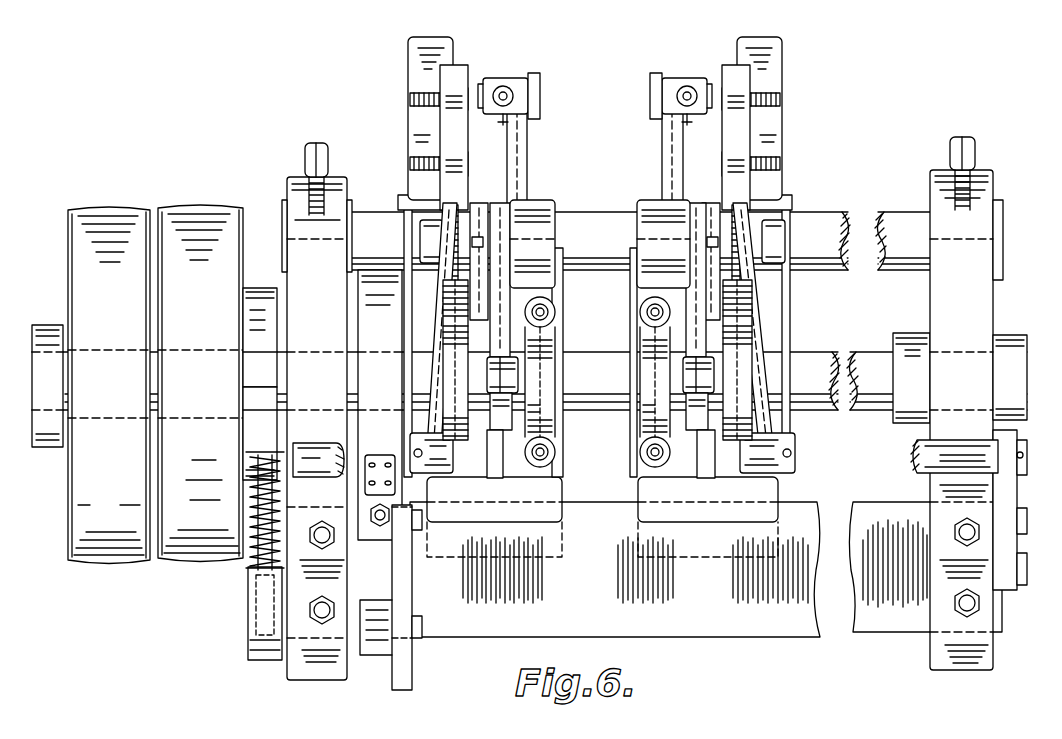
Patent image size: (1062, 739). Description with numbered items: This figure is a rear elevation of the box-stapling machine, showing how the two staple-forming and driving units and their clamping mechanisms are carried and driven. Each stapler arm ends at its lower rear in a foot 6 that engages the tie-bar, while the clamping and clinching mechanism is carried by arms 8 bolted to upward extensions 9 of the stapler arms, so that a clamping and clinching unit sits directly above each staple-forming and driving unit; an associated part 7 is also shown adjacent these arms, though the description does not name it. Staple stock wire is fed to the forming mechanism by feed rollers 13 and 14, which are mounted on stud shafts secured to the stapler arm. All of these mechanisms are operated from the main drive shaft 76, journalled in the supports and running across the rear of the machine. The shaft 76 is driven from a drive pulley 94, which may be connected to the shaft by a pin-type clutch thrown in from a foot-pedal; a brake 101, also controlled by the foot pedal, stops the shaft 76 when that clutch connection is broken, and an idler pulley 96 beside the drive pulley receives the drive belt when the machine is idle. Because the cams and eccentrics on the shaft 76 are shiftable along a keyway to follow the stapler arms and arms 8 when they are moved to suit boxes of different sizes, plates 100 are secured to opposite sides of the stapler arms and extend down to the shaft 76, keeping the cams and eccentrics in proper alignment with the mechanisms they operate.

The foot 6 is at (643, 555).
The adjusting rod 7 is at (508, 186).
The arms 8 is at (455, 130).
The upward extensions 9 is at (422, 53).
The feed roller 13 is at (445, 198).
The feed roller 14 is at (468, 286).
The main drive shaft 76 is at (583, 357).
The drive pulley 94 is at (78, 207).
The idler pulley 96 is at (190, 207).
The plates 100 is at (636, 300).
The brake 101 is at (383, 438).